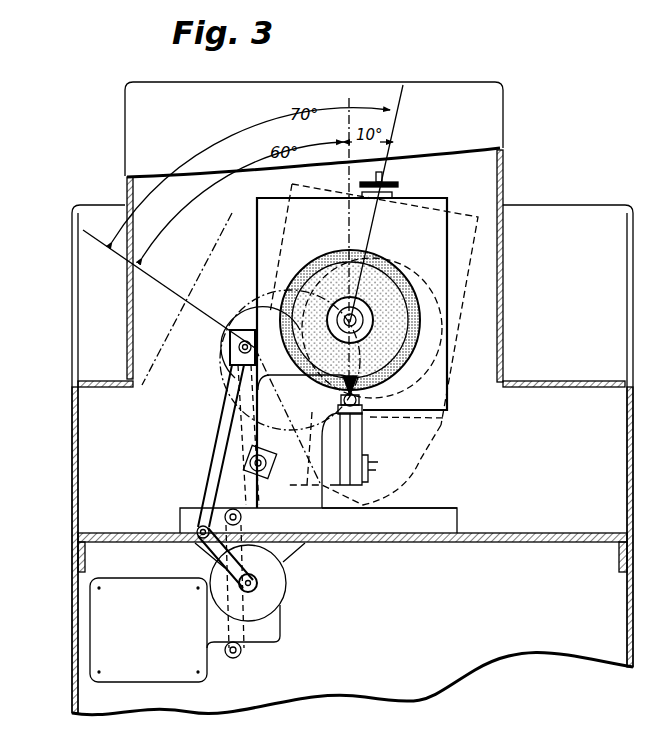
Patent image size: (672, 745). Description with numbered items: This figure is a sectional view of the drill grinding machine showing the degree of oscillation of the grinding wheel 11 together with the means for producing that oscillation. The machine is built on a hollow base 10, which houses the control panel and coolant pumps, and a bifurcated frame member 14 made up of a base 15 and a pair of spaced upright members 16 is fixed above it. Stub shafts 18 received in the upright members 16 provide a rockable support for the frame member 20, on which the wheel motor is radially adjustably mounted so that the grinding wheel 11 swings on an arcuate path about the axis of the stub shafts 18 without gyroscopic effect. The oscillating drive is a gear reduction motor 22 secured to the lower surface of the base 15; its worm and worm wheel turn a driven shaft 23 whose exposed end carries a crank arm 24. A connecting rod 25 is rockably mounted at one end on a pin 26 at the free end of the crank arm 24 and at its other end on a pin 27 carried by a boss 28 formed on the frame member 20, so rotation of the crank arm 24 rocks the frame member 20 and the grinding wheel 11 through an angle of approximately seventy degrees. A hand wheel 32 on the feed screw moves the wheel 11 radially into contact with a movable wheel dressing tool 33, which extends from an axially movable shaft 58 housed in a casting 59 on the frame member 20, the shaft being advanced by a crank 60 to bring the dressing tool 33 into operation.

The hollow base 10 is at (70, 600).
The grinding wheel 11 is at (343, 275).
The bifurcated frame member 14 is at (441, 506).
The base 15 is at (407, 512).
The spaced upright members 16 is at (303, 500).
The stub shafts 18 is at (405, 399).
The frame member 20 is at (430, 212).
The motor 22 is at (138, 595).
The driven shaft 23 is at (262, 585).
The crank arm 24 is at (223, 553).
The connecting rod 25 is at (221, 470).
The pin 26 is at (198, 529).
The pin 27 is at (232, 356).
The boss 28 is at (238, 346).
The hand wheel 32 is at (384, 183).
The wheel dressing tool 33 is at (342, 398).
The axially movable shaft 58 is at (338, 411).
The casting 59 is at (358, 436).
The crank 60 is at (372, 461).